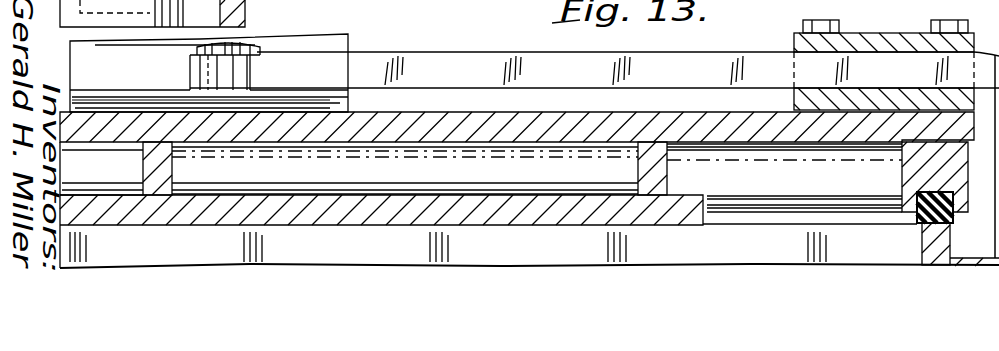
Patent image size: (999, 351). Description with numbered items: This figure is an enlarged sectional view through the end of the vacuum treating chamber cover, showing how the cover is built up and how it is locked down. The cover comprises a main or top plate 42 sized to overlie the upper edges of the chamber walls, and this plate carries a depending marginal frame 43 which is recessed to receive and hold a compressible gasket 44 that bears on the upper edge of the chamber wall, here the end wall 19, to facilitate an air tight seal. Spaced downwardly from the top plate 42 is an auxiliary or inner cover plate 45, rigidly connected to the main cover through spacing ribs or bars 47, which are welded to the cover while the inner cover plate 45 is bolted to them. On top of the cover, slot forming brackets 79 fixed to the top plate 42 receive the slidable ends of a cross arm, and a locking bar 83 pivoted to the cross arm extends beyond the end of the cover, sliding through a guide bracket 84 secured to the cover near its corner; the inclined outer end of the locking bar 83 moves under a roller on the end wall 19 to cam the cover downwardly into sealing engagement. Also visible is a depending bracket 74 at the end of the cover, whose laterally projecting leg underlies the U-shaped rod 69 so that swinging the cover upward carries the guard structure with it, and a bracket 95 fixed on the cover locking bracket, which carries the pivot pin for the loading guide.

The end wall 19 is at (936, 244).
The main or top plate 42 is at (672, 118).
The depending marginal frame 43 is at (906, 162).
The compressible gasket 44 is at (917, 200).
The auxiliary or inner cover plate 45 is at (481, 200).
The spacing ribs or bars 47 is at (157, 167).
The U-shaped rod 69 is at (392, 0).
The depending bracket 74 is at (252, 0).
The slot forming bracket 79 is at (348, 43).
The locking bar 83 is at (490, 58).
The guide bracket 84 is at (883, 32).
The bracket 95 is at (348, 9).